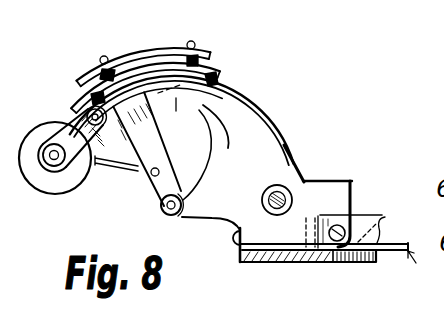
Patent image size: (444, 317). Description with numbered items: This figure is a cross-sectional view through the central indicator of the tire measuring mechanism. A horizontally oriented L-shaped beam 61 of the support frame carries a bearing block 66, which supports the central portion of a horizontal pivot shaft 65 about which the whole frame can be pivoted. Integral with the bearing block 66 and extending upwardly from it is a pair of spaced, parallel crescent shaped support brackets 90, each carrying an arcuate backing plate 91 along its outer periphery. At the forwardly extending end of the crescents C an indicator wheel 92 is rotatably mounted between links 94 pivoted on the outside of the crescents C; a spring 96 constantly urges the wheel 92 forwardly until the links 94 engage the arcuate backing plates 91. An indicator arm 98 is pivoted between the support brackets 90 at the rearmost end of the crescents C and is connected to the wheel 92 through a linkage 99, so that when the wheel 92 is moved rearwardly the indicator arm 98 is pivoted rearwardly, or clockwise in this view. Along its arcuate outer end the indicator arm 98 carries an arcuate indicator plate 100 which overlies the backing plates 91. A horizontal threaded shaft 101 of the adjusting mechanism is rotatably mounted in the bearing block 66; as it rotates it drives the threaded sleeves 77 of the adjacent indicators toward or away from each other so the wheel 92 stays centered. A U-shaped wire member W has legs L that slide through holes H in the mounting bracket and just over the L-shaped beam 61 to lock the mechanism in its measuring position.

The arcuate indicator plate 100 is at (138, 47).
The backing plate 91 is at (272, 112).
The spring 96 is at (205, 103).
The crescent shaped support bracket 90 is at (271, 162).
The indicator arm 98 is at (150, 153).
The link 94 is at (57, 124).
The indicator wheel 92 is at (30, 190).
The linkage 99 is at (128, 171).
The threaded sleeve 77 is at (282, 213).
The threaded shaft 101 is at (293, 210).
The bearing block 66 is at (349, 204).
The L-shaped beam 61 is at (297, 262).
The pivot shaft 65 is at (331, 259).
The crescent C is at (172, 108).
The hole H is at (390, 230).
The leg L is at (388, 260).
The U-shaped wire member W is at (420, 264).